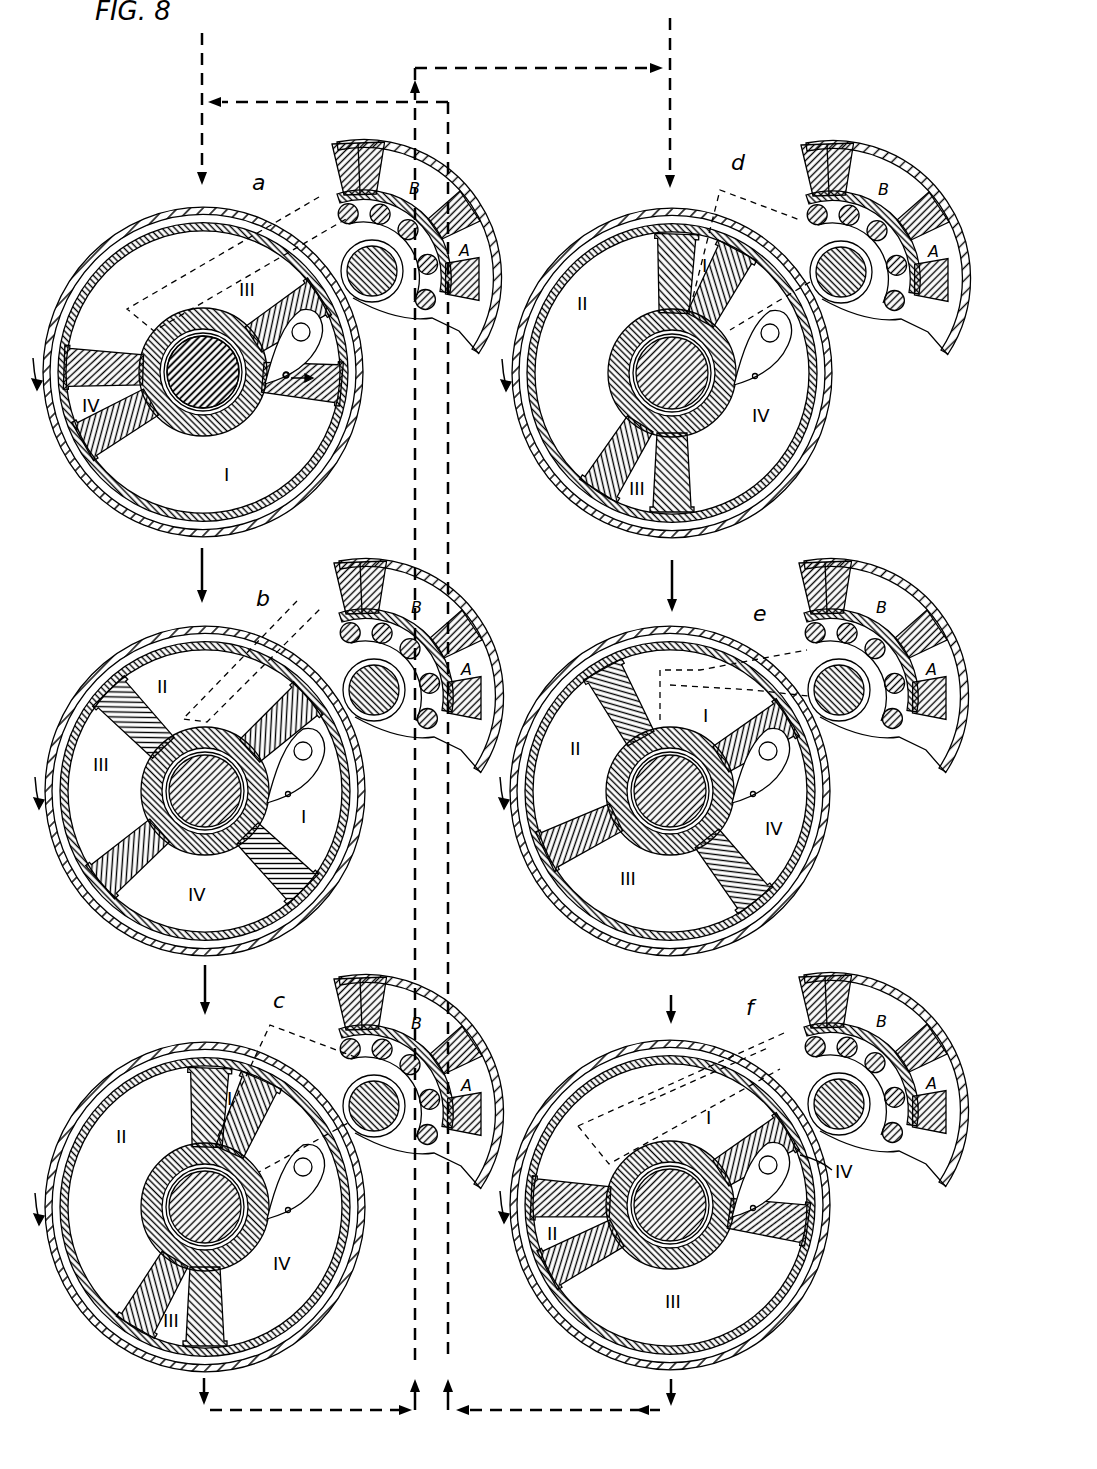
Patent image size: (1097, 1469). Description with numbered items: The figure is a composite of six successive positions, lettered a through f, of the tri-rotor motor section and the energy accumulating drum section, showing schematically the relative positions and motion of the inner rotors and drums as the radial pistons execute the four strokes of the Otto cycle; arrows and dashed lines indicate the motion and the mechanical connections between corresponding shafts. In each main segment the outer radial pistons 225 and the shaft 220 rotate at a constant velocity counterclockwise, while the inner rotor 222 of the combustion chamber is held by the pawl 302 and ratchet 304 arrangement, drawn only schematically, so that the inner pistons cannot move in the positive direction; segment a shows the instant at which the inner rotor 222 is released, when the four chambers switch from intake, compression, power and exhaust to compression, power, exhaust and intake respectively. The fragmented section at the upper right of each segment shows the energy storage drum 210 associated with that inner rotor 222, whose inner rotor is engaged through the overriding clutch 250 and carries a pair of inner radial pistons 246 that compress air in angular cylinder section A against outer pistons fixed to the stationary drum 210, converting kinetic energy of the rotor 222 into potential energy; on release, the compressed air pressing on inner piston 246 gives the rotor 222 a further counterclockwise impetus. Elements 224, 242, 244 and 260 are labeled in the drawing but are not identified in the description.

The energy storage drum 210 is at (441, 396).
The shaft 220 is at (199, 351).
The inner rotor 222 is at (198, 415).
The spoke 224 is at (123, 425).
The outer radial pistons 225 is at (231, 391).
The roller journal 242 is at (879, 305).
The bearing ring 244 is at (863, 308).
The inner radial pistons 246 is at (491, 215).
The overriding clutch 250 is at (334, 174).
The bearing assembly 260 is at (414, 231).
The pawl 302 is at (335, 347).
The ratchet 304 is at (287, 409).